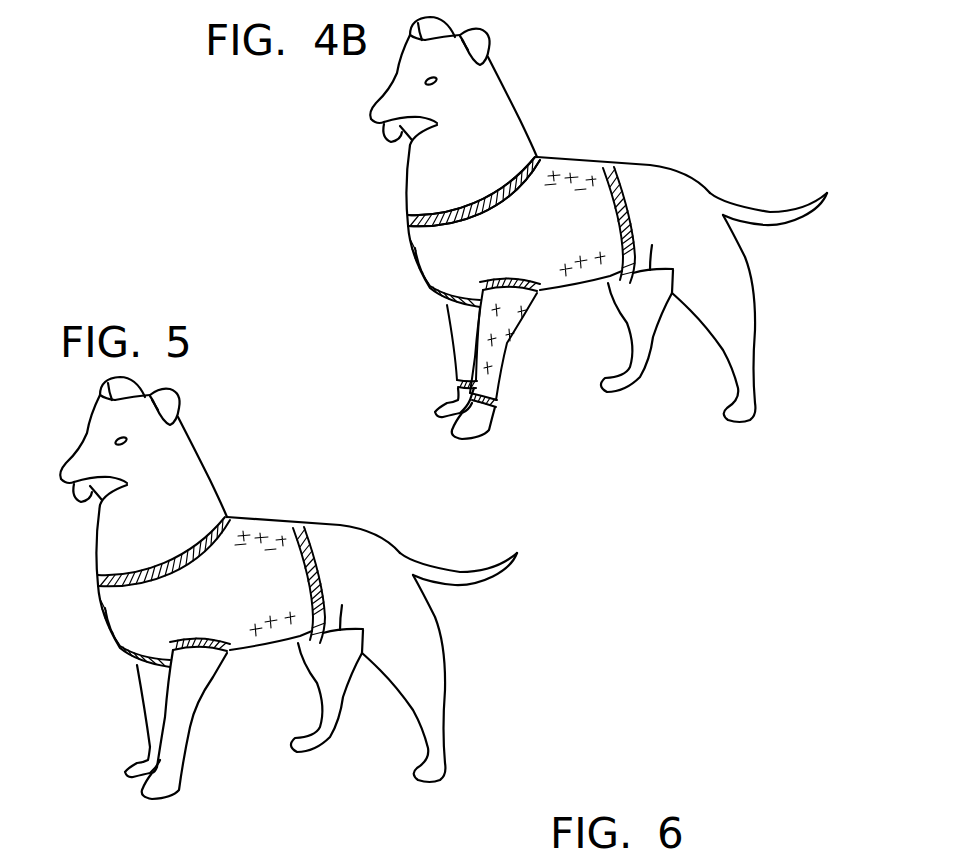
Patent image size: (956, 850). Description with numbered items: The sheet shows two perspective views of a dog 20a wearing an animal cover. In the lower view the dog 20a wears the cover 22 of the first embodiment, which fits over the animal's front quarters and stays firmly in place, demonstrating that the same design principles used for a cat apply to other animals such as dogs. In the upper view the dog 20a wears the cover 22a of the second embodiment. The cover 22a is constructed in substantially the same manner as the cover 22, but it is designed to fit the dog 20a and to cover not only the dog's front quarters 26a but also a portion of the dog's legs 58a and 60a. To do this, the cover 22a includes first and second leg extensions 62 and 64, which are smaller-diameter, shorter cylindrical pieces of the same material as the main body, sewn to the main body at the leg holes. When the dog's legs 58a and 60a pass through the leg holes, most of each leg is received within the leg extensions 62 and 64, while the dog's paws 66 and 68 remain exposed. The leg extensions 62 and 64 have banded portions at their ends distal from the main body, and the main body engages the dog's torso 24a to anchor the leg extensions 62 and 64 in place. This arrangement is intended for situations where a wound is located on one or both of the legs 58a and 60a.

In FIG. 4B, the dog 20a is at (492, 242).
In FIG. 5, the dog 20a is at (222, 528).
In FIG. 4B, the cover 22a is at (583, 150).
In FIG. 4B, the torso 24a is at (600, 155).
In FIG. 4B, the front quarters 26a is at (390, 238).
In FIG. 4B, the leg 58a is at (492, 408).
In FIG. 4B, the leg 60a is at (457, 386).
In FIG. 4B, the first leg extension 62 is at (412, 346).
In FIG. 4B, the second leg extension 64 is at (536, 362).
In FIG. 4B, the paw 66 is at (437, 412).
In FIG. 4B, the paw 68 is at (479, 431).
In FIG. 5, the cover 22 is at (277, 520).